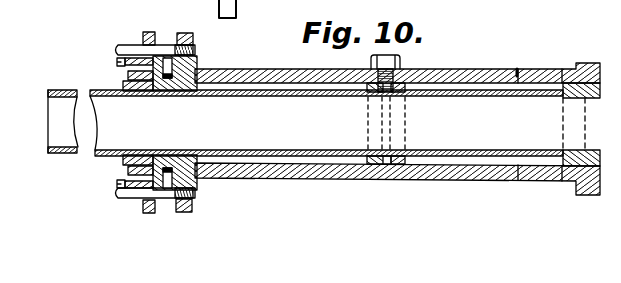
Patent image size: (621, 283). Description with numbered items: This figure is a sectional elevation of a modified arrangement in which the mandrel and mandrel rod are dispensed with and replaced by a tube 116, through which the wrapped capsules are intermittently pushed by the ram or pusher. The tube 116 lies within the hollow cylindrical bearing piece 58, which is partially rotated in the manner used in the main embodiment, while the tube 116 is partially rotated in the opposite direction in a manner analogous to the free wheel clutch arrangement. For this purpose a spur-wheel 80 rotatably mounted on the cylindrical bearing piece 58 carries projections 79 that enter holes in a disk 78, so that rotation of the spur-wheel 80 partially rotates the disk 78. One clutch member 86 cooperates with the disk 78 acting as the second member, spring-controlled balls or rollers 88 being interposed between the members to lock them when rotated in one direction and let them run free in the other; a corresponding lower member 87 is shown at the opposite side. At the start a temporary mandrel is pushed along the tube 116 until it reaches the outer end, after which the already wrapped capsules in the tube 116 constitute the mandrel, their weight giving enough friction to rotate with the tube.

The hollow cylindrical bearing piece 58 is at (275, 70).
The tube 116 is at (305, 123).
The disk 78 is at (146, 33).
The projections 79 is at (123, 48).
The spur-wheel 80 is at (197, 33).
The free wheel clutch member 86 is at (125, 85).
The lower clamp block 87 is at (123, 176).
The spring-controlled balls or rollers 88 is at (123, 63).